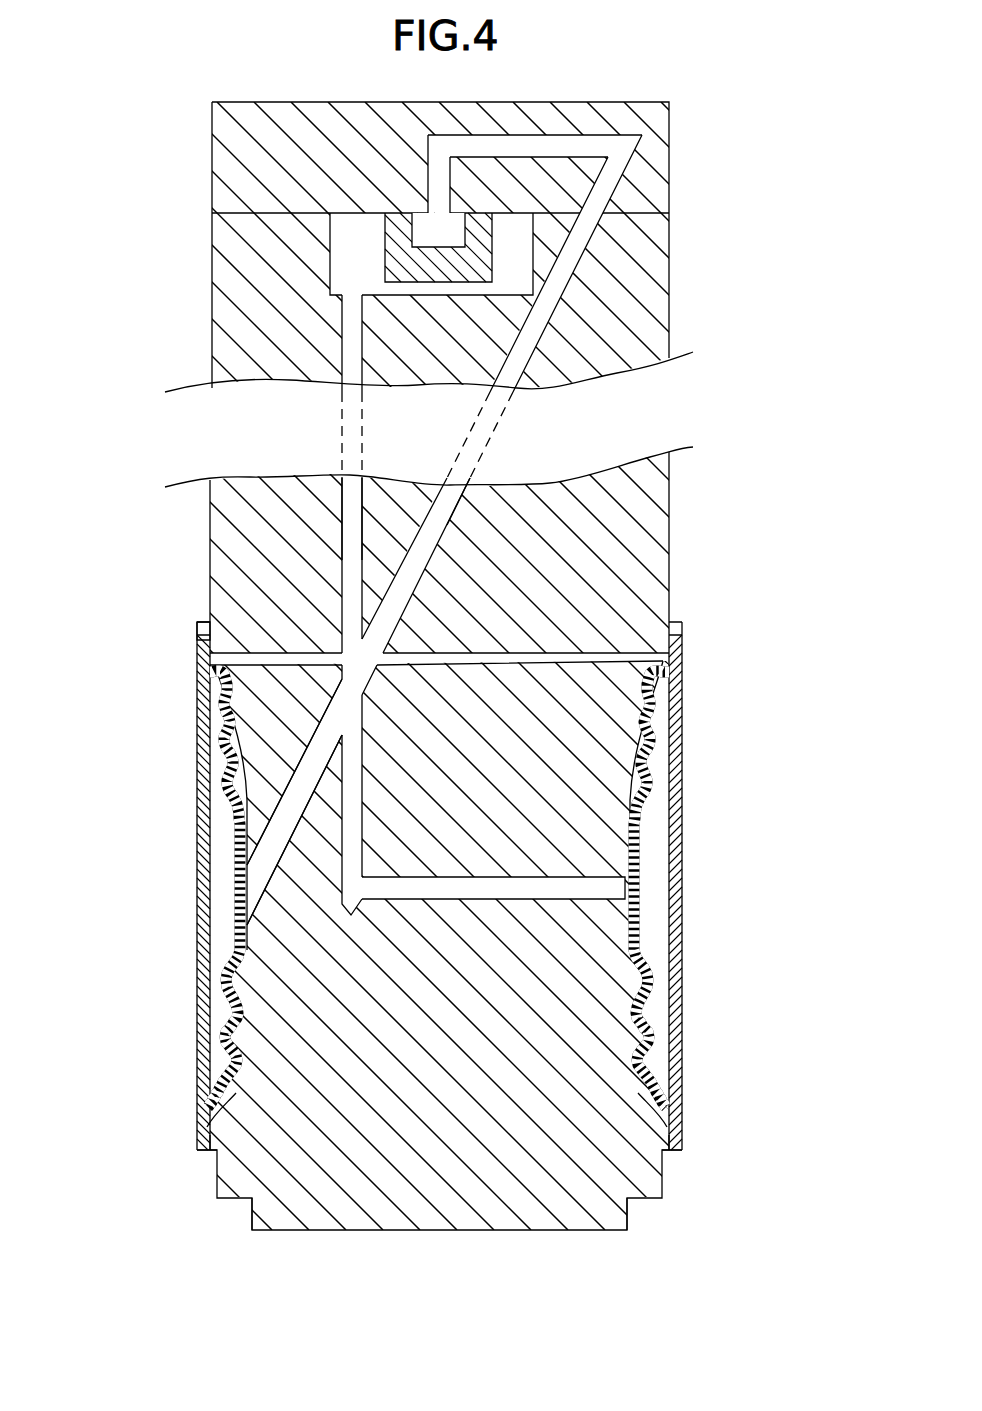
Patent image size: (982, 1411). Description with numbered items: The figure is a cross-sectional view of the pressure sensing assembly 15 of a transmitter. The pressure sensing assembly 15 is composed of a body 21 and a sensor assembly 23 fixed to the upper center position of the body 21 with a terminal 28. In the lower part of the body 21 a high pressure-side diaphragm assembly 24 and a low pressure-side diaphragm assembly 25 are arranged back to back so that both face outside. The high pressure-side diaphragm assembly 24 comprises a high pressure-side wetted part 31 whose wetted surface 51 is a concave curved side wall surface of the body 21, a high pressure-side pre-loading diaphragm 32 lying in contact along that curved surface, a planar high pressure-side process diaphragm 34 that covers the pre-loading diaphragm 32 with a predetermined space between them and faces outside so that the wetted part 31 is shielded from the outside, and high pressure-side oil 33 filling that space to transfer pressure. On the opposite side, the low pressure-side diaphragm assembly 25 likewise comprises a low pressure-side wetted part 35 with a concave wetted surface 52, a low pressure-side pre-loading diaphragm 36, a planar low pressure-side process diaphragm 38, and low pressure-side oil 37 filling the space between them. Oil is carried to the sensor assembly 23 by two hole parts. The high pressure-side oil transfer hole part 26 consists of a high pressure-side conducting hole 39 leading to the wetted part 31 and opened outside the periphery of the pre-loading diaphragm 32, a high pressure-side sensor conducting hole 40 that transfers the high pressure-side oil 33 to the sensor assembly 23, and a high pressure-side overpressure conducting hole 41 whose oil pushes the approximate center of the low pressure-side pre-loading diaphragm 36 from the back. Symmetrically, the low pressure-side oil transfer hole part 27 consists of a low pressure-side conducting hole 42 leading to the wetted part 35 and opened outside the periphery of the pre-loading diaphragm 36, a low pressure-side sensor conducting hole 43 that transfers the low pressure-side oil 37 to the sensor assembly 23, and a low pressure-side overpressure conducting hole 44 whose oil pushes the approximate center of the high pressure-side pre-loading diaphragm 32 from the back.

The pressure sensing assembly 15 is at (712, 148).
The sensor assembly 23 is at (720, 245).
The terminal 28 is at (492, 277).
The body 21 is at (670, 464).
The low pressure-side oil transfer hole part 27 is at (458, 553).
The low pressure-side sensor conducting hole 43 is at (448, 512).
The high pressure-side oil transfer hole part 26 is at (345, 570).
The high pressure-side sensor conducting hole 40 is at (350, 520).
The low pressure-side conducting hole 42 is at (612, 650).
The high pressure-side overpressure conducting hole 41 is at (495, 890).
The low pressure-side overpressure conducting hole 44 is at (278, 812).
The high pressure-side pre-loading diaphragm 32 is at (203, 884).
The high pressure-side conducting hole 39 is at (208, 615).
The low pressure-side process diaphragm 38 is at (680, 915).
The high pressure-side oil 33 is at (212, 700).
The low pressure-side oil 37 is at (657, 858).
The high pressure-side process diaphragm 34 is at (222, 763).
The low pressure-side pre-loading diaphragm 36 is at (648, 1024).
The high pressure-side diaphragm assembly 24 is at (147, 808).
The low pressure-side diaphragm assembly 25 is at (710, 797).
The high pressure-side wetted part 31 is at (224, 1124).
The low pressure-side wetted part 35 is at (638, 1125).
The wetted surface 51 is at (268, 885).
The wetted surface 52 is at (628, 952).